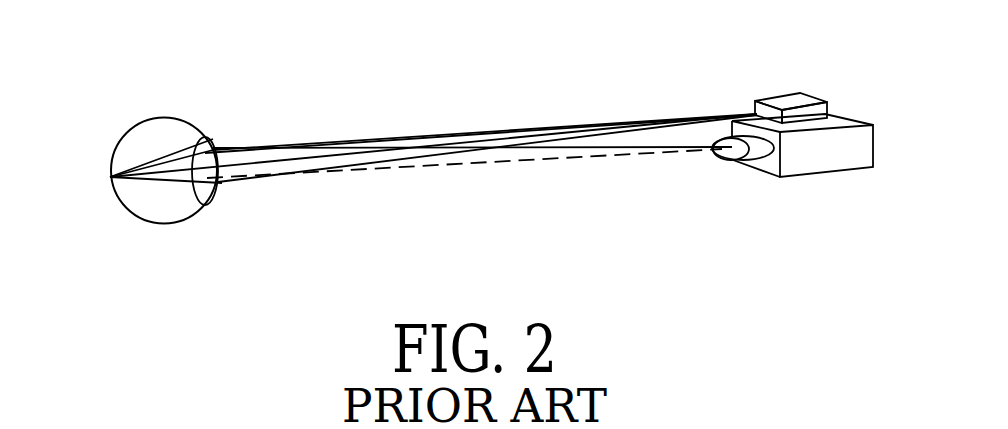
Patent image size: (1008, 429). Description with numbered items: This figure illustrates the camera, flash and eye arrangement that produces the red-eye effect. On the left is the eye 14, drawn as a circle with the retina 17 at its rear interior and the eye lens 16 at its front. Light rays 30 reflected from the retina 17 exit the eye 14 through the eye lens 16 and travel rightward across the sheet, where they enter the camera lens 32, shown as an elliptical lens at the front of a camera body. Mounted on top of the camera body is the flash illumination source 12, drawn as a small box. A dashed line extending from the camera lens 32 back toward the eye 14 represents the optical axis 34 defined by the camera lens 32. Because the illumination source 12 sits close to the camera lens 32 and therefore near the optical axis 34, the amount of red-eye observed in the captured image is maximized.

The illumination source 12 is at (795, 100).
The eye 14 is at (163, 213).
The eye lens 16 is at (207, 140).
The retina 17 is at (146, 118).
The light rays 30 is at (427, 156).
The camera lens 32 is at (730, 157).
The optical axis 34 is at (580, 158).